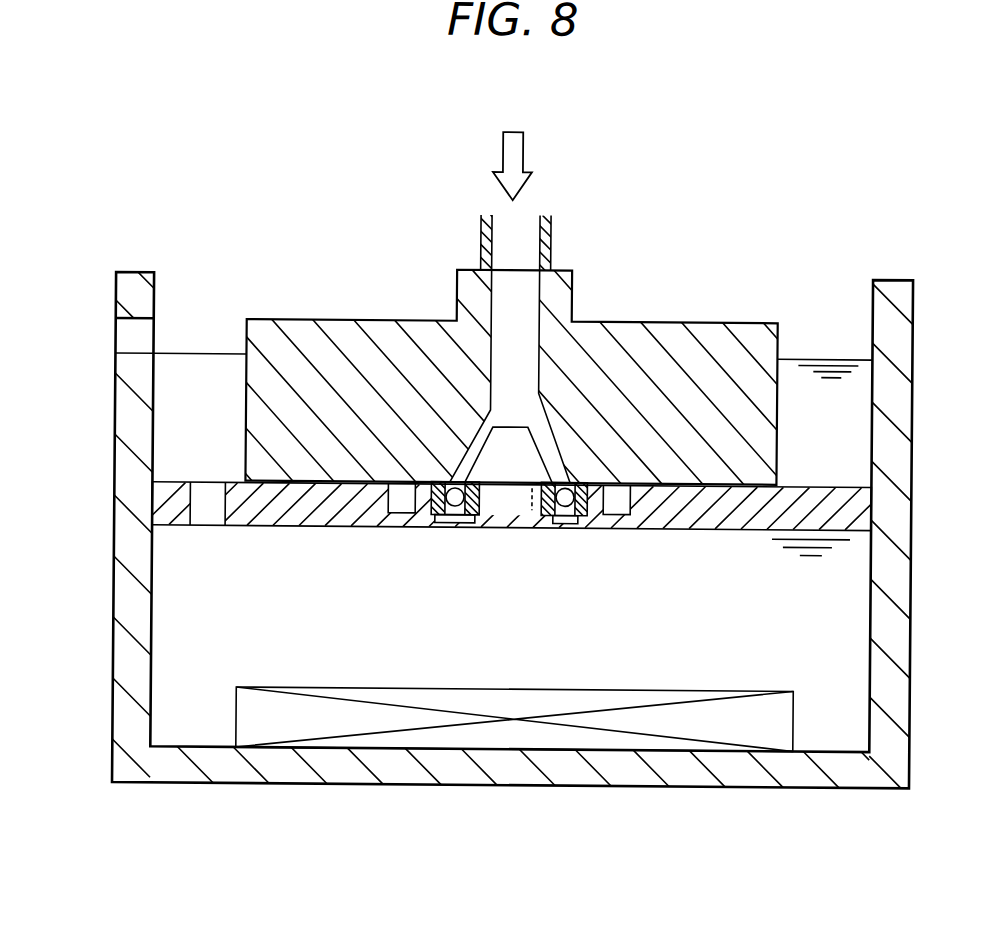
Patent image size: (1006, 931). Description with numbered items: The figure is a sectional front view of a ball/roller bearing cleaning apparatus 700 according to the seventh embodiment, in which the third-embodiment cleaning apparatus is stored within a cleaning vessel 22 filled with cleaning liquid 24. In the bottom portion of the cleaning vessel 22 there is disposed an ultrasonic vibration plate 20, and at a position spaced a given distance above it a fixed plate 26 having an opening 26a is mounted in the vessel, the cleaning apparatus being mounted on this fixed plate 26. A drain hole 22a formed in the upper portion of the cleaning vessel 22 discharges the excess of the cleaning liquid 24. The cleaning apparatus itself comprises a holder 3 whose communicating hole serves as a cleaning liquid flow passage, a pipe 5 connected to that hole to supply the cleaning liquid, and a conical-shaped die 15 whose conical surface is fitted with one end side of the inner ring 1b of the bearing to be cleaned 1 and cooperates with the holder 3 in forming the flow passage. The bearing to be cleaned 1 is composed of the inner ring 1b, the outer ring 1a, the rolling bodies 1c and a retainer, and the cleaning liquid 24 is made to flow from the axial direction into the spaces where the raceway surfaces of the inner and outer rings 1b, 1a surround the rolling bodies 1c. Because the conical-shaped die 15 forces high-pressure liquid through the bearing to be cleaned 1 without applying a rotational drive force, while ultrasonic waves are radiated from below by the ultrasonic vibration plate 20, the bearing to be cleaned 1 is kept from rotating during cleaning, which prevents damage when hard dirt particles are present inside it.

The ball/roller bearing cleaning apparatus 700 is at (720, 173).
The cleaning vessel 22 is at (888, 274).
The drain hole 22a is at (122, 338).
The cleaning liquid 24 is at (521, 142).
The holder 3 is at (753, 317).
The pipe 5 is at (477, 237).
The conical-shaped die 15 is at (525, 452).
The bearing to be cleaned 1 is at (544, 426).
The outer ring 1a is at (435, 512).
The inner ring 1b is at (478, 513).
The rolling bodies 1c is at (456, 513).
The fixed plate 26 is at (859, 506).
The opening 26a is at (208, 518).
The ultrasonic vibration plate 20 is at (796, 717).